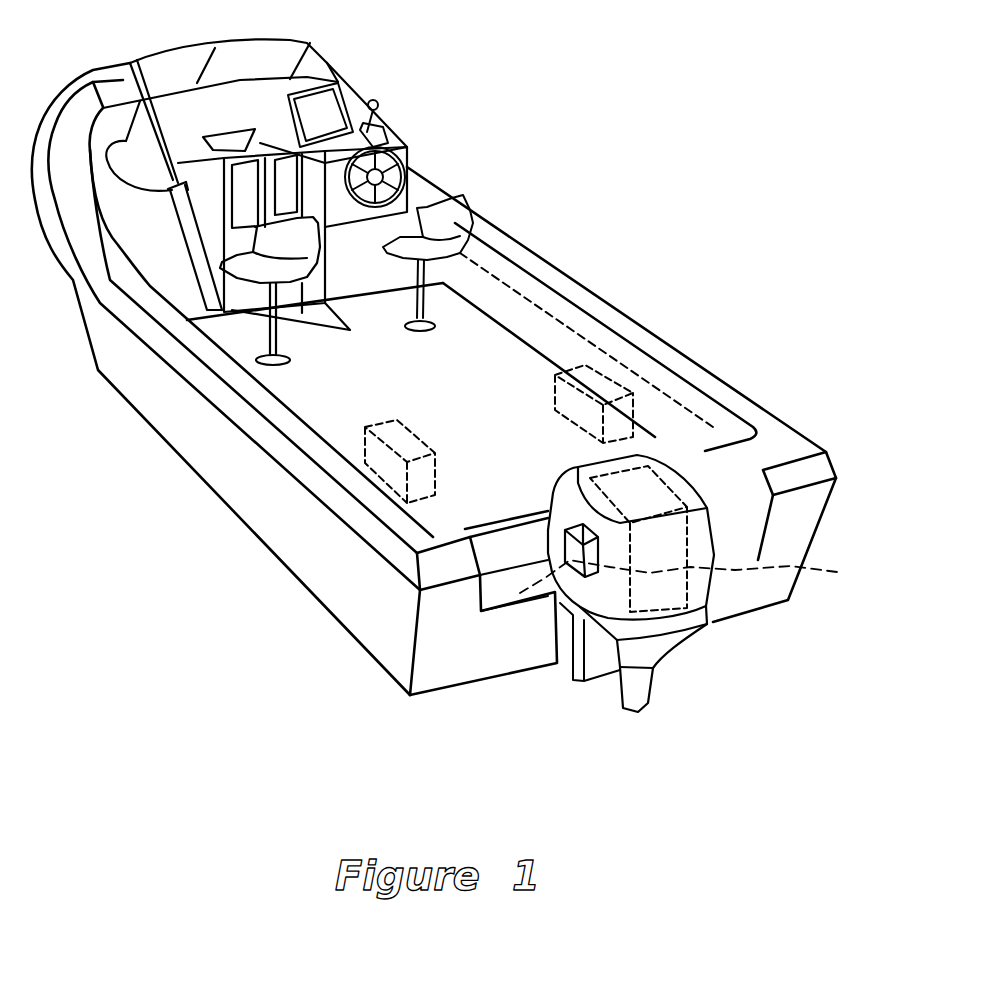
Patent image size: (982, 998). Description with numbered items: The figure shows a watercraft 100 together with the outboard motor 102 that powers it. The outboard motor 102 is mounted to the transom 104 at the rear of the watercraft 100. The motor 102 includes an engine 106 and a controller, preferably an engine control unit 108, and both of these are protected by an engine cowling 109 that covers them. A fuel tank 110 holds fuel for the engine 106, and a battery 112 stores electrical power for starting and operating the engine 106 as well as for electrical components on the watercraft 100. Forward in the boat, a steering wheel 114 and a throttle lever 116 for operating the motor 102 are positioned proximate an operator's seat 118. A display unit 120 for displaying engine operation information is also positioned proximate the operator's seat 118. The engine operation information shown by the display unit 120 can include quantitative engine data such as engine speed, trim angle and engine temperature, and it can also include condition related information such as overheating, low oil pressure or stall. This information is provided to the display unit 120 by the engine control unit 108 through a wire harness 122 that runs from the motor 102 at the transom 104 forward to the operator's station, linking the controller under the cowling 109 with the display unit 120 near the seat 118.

The watercraft 100 is at (250, 488).
The outboard motor 102 is at (645, 653).
The transom 104 is at (537, 627).
The engine 106 is at (709, 578).
The engine control unit 108 is at (560, 575).
The engine cowling 109 is at (677, 490).
The fuel tank 110 is at (407, 445).
The battery 112 is at (620, 370).
The steering wheel 114 is at (400, 197).
The throttle lever 116 is at (380, 108).
The operator's seat 118 is at (453, 227).
The display unit 120 is at (328, 103).
The wire harness 122 is at (557, 316).